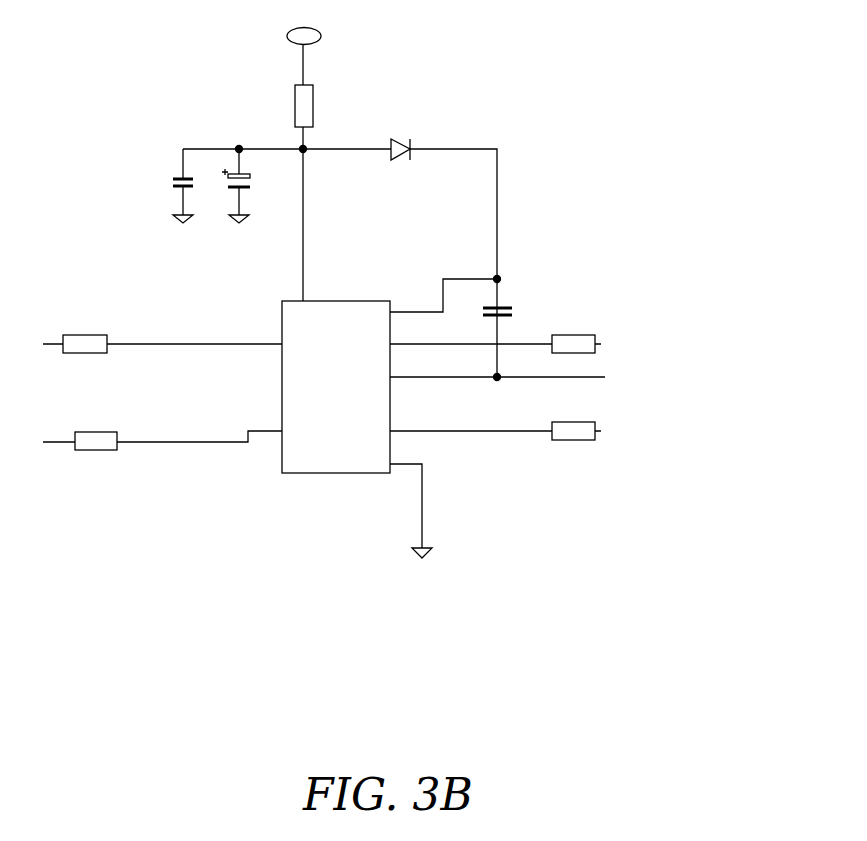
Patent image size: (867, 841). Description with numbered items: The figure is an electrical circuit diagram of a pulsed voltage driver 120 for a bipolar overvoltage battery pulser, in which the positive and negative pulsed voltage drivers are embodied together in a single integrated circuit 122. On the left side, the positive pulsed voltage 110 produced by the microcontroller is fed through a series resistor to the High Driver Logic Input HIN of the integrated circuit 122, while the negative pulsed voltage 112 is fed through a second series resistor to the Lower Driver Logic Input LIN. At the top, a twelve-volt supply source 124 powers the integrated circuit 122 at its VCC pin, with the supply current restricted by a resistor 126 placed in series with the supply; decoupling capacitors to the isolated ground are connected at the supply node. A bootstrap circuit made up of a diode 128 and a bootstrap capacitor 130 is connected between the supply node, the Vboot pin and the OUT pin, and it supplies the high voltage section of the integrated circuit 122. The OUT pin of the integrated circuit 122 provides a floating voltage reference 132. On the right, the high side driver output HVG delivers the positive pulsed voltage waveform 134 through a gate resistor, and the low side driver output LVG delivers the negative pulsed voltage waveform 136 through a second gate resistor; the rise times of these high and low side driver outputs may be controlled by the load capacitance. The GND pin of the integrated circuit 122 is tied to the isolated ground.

The positive pulsed voltage 110 is at (43, 345).
The negative pulsed voltage 112 is at (43, 442).
The pulsed voltage driver 120 is at (199, 605).
The integrated circuit 122 is at (335, 473).
The 12-volt supply source 124 is at (283, 33).
The resistor 126 is at (293, 82).
The diode 128 is at (393, 138).
The bootstrap capacitor 130 is at (512, 310).
The floating voltage reference 132 is at (468, 377).
The positive pulsed voltage waveform 134 is at (601, 344).
The negative pulsed voltage waveform 136 is at (605, 432).